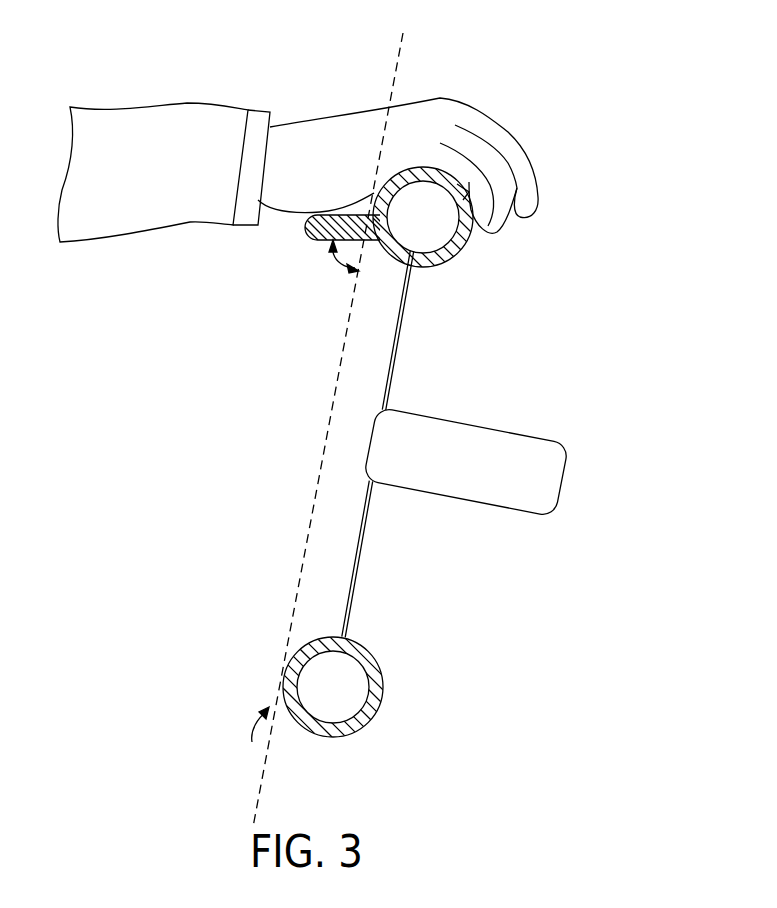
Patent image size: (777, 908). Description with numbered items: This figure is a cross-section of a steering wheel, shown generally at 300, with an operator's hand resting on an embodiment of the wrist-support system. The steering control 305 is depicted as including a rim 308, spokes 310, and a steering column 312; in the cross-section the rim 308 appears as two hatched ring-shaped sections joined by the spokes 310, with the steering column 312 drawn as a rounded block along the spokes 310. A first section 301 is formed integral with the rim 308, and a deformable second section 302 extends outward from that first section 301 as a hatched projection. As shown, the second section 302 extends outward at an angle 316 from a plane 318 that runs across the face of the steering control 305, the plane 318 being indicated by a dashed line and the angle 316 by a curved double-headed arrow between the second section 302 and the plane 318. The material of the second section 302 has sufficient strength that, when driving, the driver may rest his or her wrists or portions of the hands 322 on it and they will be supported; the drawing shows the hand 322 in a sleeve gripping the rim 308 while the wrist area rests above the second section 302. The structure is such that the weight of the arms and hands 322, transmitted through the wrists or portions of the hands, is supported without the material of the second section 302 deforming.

The system 300 is at (84, 447).
The first section 301 is at (372, 238).
The second section 302 is at (307, 237).
The steering control 305 is at (245, 737).
The rim 308 is at (417, 262).
The spokes 310 is at (335, 535).
The steering column 312 is at (533, 430).
The angle 316 is at (335, 258).
The plane 318 is at (258, 808).
The hands 322 is at (403, 101).